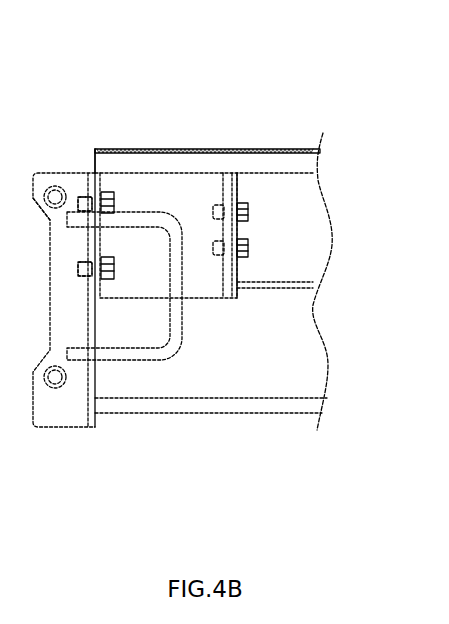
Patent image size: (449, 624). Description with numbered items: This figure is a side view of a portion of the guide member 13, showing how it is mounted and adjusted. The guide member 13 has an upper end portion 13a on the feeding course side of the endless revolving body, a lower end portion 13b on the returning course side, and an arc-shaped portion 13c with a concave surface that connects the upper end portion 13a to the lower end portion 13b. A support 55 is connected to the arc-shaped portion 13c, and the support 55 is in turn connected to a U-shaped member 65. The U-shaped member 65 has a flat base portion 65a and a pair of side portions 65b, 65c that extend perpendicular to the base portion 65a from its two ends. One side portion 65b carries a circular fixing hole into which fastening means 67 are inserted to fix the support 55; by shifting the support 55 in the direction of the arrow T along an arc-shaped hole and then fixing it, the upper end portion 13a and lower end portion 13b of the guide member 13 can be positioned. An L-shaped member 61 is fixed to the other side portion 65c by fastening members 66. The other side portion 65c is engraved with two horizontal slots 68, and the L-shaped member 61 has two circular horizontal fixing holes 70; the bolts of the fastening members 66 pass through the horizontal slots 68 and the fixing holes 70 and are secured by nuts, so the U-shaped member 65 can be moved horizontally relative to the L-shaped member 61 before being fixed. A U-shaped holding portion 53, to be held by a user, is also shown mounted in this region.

The guide member 13 is at (360, 281).
The upper end portion 13a is at (265, 150).
The lower end portion 13b is at (233, 413).
The arc-shaped portion 13c is at (237, 347).
The U-shaped holding portion 53 is at (145, 357).
The support 55 is at (237, 188).
The L-shaped member 61 is at (70, 428).
The U-shaped member 65 is at (181, 217).
The base portion 65a is at (190, 187).
The side portion 65b is at (223, 173).
The other side portion 65c is at (93, 150).
The fastening members 66 is at (115, 267).
The fastening means 67 is at (248, 248).
The horizontal slots 68 is at (88, 252).
The horizontal fixing holes 70 is at (80, 265).
The arrow T is at (0, 289).